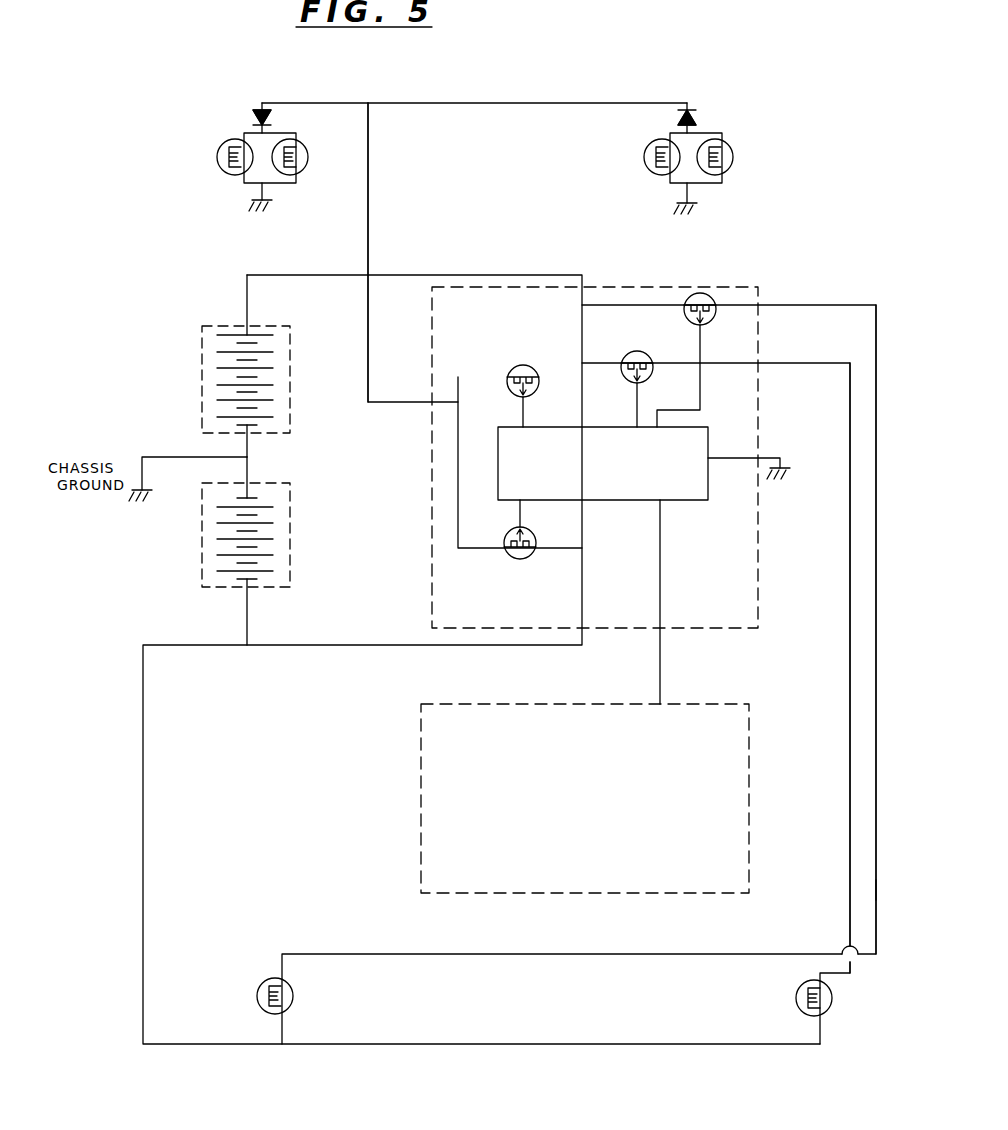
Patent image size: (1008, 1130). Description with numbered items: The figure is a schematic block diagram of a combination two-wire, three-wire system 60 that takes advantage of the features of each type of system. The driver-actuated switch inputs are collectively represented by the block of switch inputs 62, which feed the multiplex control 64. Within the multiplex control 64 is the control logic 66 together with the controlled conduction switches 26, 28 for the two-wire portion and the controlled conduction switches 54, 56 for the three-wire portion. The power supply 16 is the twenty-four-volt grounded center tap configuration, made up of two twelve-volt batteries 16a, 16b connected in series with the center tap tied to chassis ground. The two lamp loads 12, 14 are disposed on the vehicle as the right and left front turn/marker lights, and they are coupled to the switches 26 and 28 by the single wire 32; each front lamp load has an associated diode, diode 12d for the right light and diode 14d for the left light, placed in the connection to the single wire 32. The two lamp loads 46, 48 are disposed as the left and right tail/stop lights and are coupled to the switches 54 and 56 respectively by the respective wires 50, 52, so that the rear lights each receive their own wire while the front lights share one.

The lamp load 12 is at (724, 167).
The diode of right-front light 12d is at (680, 121).
The lamp load 14 is at (300, 167).
The diode of left-front light 14d is at (254, 116).
The power supply 16 is at (224, 460).
The power supply battery 16a is at (202, 340).
The power supply battery 16b is at (202, 584).
The controlled conduction switch 26 is at (526, 365).
The controlled conduction switch 28 is at (522, 560).
The single wire 32 is at (368, 240).
The lamp load 46 is at (260, 984).
The lamp load 48 is at (832, 998).
The wire 50 is at (876, 862).
The wire 52 is at (850, 877).
The controlled conduction switch 54 is at (710, 296).
The controlled conduction switch 56 is at (644, 352).
The combination two-wire, three-wire system 60 is at (879, 884).
The switch inputs 62 is at (421, 836).
The multiplex control 64 is at (549, 441).
The control logic 66 is at (660, 494).